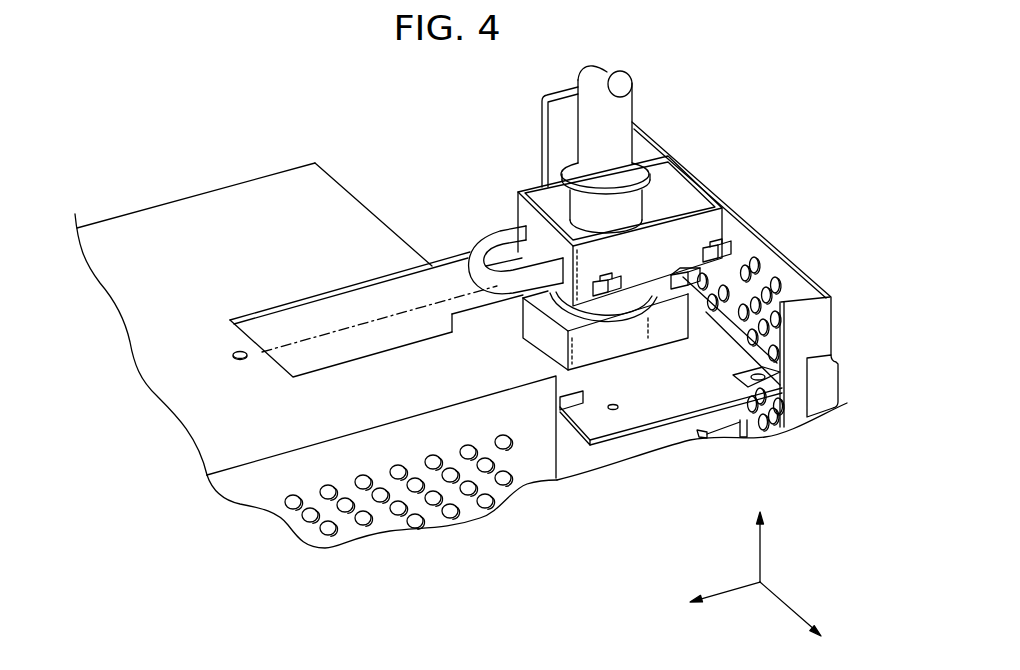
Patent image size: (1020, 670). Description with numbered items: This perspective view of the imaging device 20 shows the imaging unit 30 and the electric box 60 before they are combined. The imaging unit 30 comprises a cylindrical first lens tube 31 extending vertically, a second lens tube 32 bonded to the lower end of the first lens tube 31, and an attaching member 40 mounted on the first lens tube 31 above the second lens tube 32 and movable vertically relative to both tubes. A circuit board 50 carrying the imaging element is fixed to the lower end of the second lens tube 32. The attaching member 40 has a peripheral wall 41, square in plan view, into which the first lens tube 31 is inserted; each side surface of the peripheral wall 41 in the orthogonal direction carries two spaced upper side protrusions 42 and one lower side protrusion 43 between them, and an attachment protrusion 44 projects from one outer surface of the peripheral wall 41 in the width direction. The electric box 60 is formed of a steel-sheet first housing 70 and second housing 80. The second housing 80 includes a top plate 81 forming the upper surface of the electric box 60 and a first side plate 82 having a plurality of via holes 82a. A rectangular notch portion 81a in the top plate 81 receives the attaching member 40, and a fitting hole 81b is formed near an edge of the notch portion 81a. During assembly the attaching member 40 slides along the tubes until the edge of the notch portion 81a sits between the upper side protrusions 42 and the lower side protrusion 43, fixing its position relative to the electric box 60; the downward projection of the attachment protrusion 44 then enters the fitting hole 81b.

The printing apparatus 20 is at (226, 101).
The imaging unit 30 is at (750, 108).
The first lens tube 31 is at (620, 108).
The second lens tube 32 is at (548, 338).
The attaching member 40 is at (505, 178).
The peripheral wall 41 is at (712, 215).
The upper side protrusions 42 is at (723, 254).
The lower side protrusion 43 is at (700, 291).
The attachment protrusion 44 is at (472, 268).
The circuit board 50 is at (632, 436).
The electric box 60 is at (170, 165).
The first housing 70 is at (833, 320).
The second housing 80 is at (127, 213).
The top plate 81 is at (137, 299).
The notch portion 81a is at (315, 300).
The fitting hole 81b is at (232, 352).
The first side plate 82 is at (240, 490).
The via holes 82a is at (362, 518).